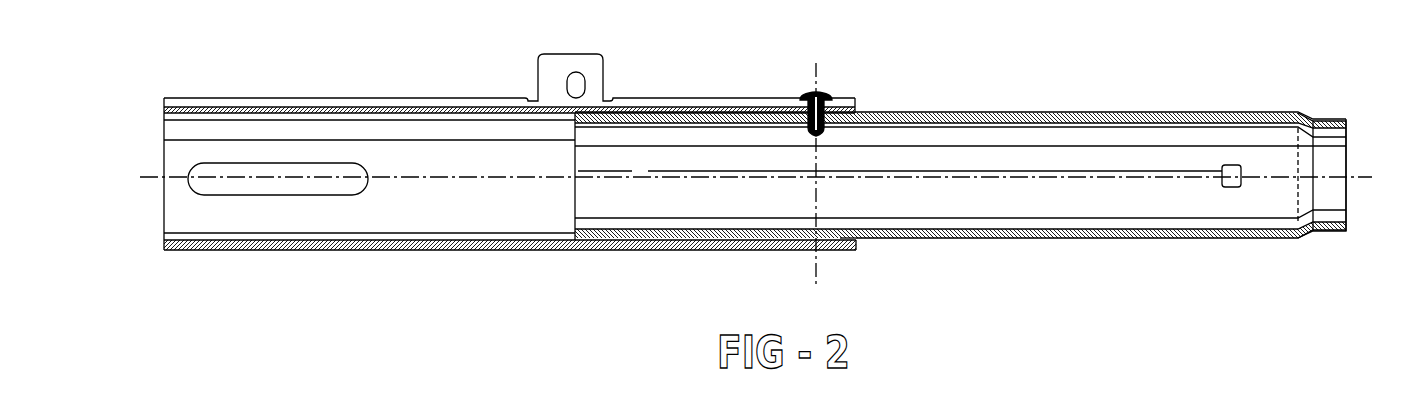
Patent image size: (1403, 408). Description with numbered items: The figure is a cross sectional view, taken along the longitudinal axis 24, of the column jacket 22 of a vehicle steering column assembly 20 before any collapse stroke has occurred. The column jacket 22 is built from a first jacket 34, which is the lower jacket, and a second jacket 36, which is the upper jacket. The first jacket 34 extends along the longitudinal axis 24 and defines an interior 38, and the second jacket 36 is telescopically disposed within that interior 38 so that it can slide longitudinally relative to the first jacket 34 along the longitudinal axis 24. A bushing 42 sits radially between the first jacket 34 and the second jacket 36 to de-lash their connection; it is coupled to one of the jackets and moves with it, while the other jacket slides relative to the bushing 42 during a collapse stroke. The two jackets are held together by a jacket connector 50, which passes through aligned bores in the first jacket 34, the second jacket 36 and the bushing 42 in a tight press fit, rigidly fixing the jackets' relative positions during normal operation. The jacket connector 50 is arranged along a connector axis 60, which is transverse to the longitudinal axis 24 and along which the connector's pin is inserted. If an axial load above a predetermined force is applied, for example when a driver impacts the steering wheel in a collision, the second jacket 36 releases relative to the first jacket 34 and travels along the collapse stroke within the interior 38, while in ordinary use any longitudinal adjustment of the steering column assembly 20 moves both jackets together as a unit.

The steering column assembly 20 is at (756, 160).
The column jacket 22 is at (1190, 110).
The longitudinal axis 24 is at (1005, 177).
The first jacket 34 is at (278, 104).
The second jacket 36 is at (944, 112).
The interior 38 is at (456, 213).
The bushing 42 is at (856, 108).
The jacket connector 50 is at (825, 85).
The connector axis 60 is at (817, 203).